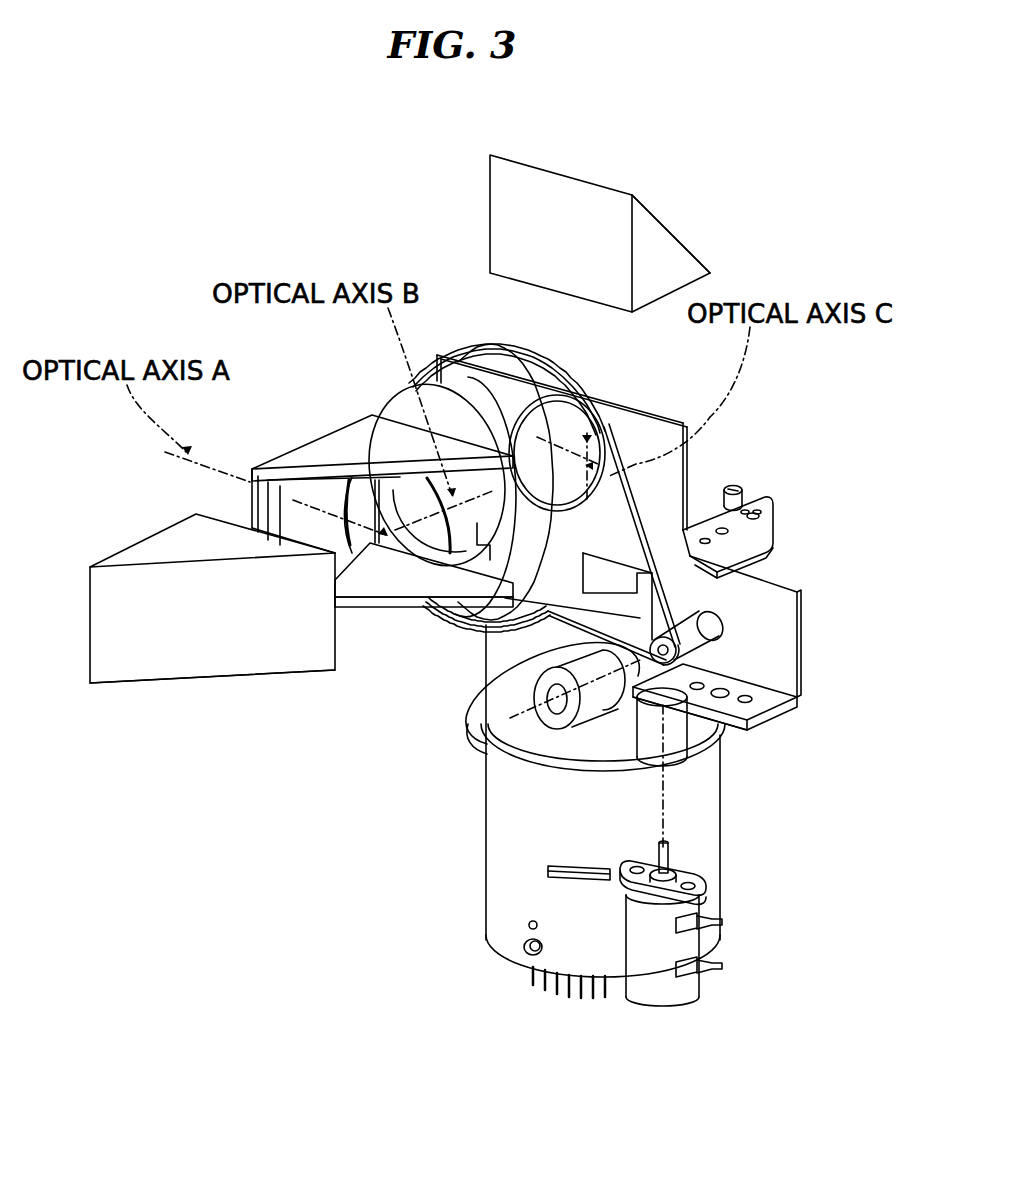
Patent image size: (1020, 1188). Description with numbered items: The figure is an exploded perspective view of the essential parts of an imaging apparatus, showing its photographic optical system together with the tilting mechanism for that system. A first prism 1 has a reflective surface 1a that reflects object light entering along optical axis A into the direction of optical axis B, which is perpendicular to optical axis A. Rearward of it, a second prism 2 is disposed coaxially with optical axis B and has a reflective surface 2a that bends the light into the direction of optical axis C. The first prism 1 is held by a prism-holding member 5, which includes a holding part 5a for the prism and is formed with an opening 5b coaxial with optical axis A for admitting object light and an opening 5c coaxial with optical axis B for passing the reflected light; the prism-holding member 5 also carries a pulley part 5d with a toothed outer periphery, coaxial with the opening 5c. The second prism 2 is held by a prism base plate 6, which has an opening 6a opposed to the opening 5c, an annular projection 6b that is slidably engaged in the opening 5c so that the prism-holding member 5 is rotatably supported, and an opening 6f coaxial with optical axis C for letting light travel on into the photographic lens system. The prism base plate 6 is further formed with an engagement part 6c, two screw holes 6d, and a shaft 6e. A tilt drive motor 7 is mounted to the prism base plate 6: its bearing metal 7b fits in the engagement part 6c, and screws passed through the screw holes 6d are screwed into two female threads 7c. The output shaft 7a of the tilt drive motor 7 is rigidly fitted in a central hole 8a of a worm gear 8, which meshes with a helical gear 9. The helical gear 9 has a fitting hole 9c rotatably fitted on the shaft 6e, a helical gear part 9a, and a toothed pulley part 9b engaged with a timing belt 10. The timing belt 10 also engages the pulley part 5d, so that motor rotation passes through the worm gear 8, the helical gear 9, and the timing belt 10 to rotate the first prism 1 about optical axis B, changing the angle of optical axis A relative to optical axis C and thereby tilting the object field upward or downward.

The first prism 1 is at (143, 552).
The reflective surface 1a is at (167, 652).
The second prism 2 is at (530, 187).
The reflective surface 2a is at (670, 222).
The prism-holding member 5 is at (318, 468).
The holding part 5a is at (373, 580).
The opening 5b is at (303, 487).
The opening 5c is at (345, 443).
The pulley part 5d is at (741, 487).
The prism base plate 6 is at (664, 440).
The opening 6a is at (537, 437).
The annular projection 6b is at (520, 350).
The engagement part 6c is at (722, 690).
The screw holes 6d is at (700, 684).
The shaft 6e is at (712, 620).
The opening 6f is at (556, 530).
The tilt drive motor 7 is at (690, 944).
The output shaft 7a is at (668, 858).
The bearing metal 7b is at (702, 884).
The female threads 7c is at (638, 866).
The worm gear 8 is at (688, 746).
The central hole 8a is at (748, 713).
The helical gear 9 is at (537, 713).
The helical gear part 9a is at (537, 678).
The toothed pulley part 9b is at (522, 662).
The fitting hole 9c is at (566, 722).
The timing belt 10 is at (565, 548).